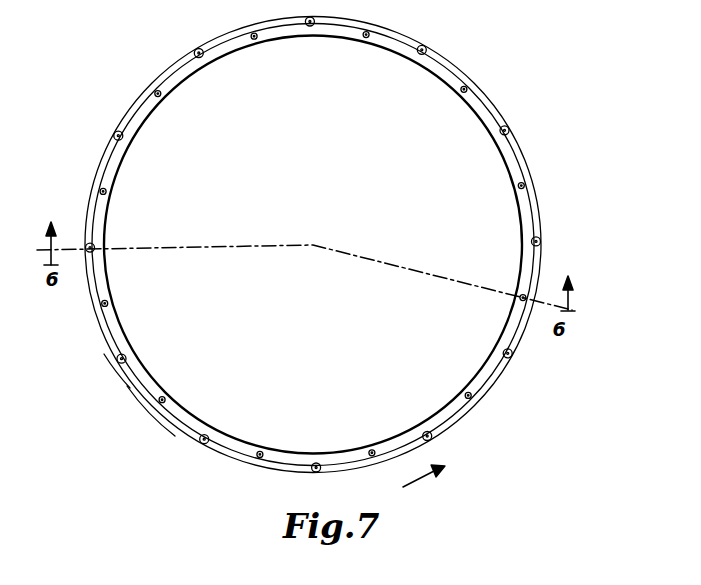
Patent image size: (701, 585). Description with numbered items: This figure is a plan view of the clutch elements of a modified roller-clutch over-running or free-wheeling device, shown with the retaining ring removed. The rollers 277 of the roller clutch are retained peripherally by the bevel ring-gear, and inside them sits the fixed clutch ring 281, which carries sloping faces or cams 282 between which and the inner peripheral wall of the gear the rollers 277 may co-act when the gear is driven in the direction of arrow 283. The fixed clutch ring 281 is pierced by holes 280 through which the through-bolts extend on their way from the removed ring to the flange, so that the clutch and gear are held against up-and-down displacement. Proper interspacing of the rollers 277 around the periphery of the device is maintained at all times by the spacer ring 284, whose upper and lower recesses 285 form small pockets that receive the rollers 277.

The rollers 277 is at (115, 360).
The holes 280 is at (530, 178).
The fixed clutch ring 281 is at (478, 103).
The sloping faces or cams 282 is at (447, 433).
The arrow 283 is at (426, 485).
The spacer ring 284 is at (147, 402).
The recesses 285 is at (118, 368).